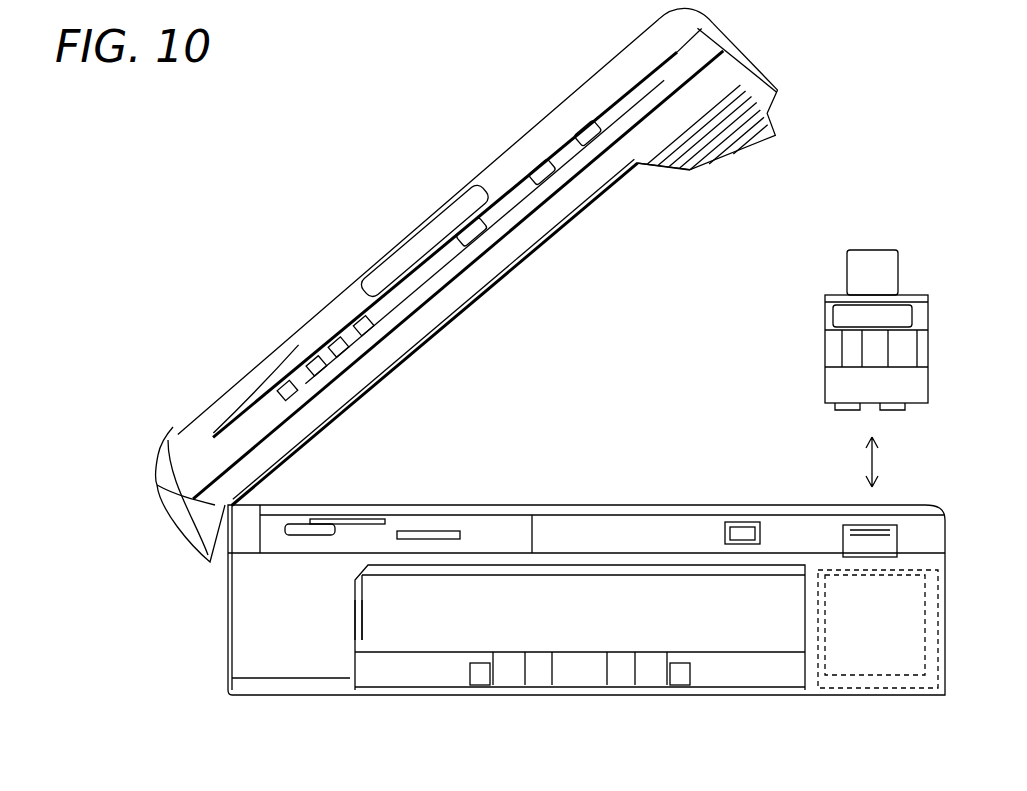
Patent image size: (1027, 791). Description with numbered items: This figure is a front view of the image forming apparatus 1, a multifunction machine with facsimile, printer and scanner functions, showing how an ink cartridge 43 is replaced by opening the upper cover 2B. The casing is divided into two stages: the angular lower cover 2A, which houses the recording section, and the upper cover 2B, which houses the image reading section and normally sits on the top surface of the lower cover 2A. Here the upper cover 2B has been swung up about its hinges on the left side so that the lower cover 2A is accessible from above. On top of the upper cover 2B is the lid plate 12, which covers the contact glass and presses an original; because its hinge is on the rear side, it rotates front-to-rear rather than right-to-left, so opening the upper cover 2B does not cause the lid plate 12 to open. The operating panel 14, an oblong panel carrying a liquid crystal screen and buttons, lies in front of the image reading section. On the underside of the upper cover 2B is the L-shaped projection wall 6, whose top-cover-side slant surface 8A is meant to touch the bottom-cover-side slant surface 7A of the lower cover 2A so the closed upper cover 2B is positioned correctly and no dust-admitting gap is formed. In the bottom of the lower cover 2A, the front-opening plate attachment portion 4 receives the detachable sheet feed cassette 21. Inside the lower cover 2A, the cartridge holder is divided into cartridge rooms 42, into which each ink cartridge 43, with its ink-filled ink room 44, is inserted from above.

The image forming apparatus 1 is at (963, 100).
The lower cover 2A is at (268, 627).
The upper cover 2B is at (700, 50).
The plate attachment portion 4 is at (350, 615).
The projection wall 6 is at (708, 127).
The bottom-cover-side slant surface 7A is at (797, 510).
The top-cover-side slant surface 8A is at (657, 166).
The lid plate 12 is at (207, 405).
The operating panel 14 is at (192, 477).
The sheet feed cassette 21 is at (405, 672).
The cartridge room 42 is at (900, 625).
The ink cartridge 43 is at (919, 461).
The ink room 44 is at (917, 318).